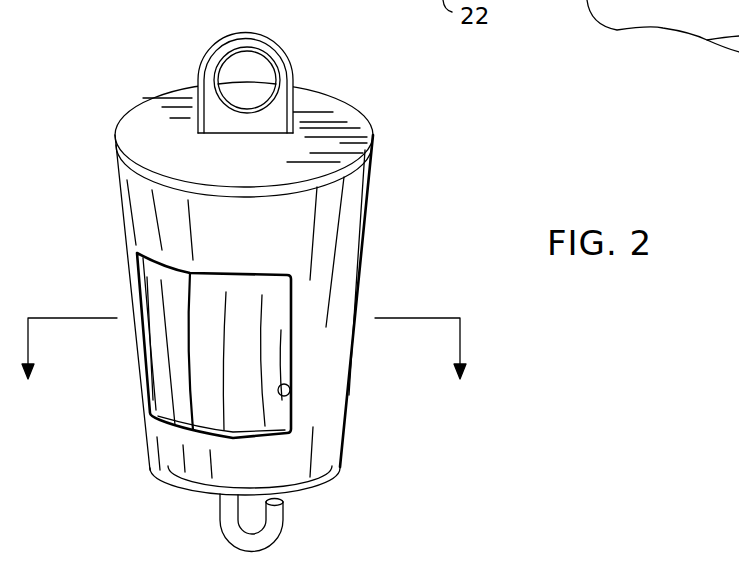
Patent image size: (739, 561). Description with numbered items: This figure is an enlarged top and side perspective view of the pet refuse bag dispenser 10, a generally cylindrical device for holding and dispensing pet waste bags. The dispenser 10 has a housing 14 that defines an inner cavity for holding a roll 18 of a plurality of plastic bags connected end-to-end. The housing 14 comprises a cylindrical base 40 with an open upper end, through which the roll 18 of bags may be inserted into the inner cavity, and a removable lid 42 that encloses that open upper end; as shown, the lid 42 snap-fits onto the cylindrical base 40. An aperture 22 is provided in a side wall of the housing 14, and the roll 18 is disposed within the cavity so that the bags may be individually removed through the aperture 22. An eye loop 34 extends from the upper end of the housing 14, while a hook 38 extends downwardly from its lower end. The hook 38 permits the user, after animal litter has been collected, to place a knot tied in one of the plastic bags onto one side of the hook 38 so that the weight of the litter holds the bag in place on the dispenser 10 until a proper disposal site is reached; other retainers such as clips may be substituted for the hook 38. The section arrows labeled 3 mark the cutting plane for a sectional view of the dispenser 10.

The pet refuse bag dispenser 10 is at (114, 104).
The housing 14 is at (369, 202).
The roll 18 is at (190, 368).
The housing aperture 22 is at (293, 403).
The eye loop 34 is at (268, 37).
The hook 38 is at (284, 523).
The cylindrical base 40 is at (363, 268).
The removable lid 42 is at (337, 108).
The section line 3- 3 is at (246, 367).